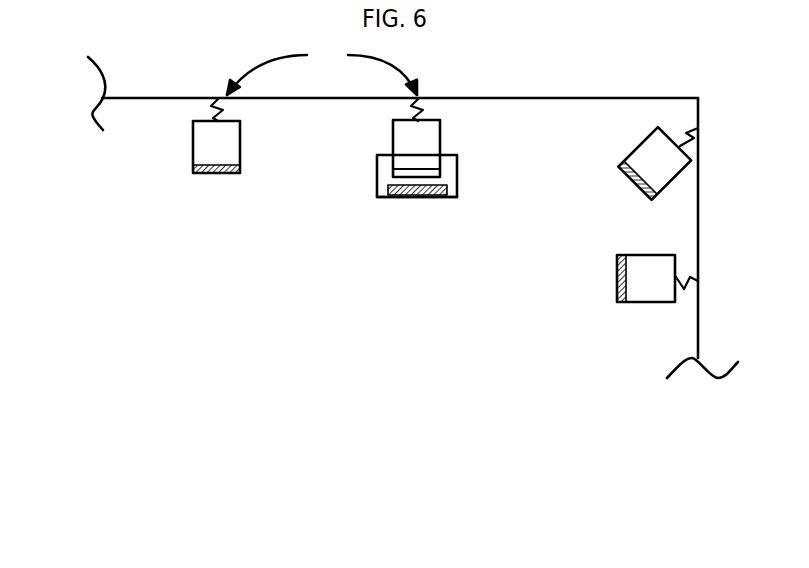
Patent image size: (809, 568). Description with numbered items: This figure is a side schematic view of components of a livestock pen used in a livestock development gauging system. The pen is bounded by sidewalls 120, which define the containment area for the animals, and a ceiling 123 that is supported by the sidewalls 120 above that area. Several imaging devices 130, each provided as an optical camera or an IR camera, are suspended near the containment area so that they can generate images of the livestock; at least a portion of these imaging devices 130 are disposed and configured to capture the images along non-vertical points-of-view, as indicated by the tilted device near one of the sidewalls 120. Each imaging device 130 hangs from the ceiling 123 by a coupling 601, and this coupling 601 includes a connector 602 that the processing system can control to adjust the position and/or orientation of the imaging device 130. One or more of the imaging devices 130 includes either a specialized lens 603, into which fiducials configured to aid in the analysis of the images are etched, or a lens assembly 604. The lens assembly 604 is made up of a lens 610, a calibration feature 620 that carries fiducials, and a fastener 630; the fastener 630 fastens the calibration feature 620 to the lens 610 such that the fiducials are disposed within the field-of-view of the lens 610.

The sidewalls 120 is at (698, 215).
The ceiling 123 is at (151, 99).
The imaging device 130 is at (212, 147).
The coupling 601 is at (322, 70).
The connector 602 is at (225, 113).
The specialized lens 603 is at (218, 172).
The lens assembly 604 is at (442, 196).
The lens 610 is at (417, 177).
The calibration feature 620 is at (397, 194).
The fastener 630 is at (458, 182).